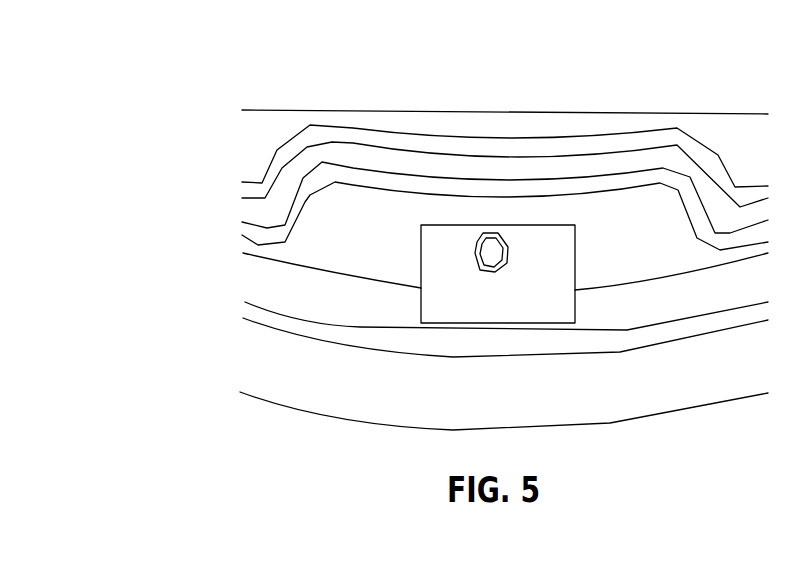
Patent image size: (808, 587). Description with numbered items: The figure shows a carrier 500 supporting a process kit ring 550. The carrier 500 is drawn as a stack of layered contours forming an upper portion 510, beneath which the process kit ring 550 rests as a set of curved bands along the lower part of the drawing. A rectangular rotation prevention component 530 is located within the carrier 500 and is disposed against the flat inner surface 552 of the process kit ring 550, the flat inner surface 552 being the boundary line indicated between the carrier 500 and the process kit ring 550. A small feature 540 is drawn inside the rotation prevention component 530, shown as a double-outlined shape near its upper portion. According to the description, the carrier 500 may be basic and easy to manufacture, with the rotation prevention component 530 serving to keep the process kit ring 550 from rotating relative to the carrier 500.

The carrier 500 is at (187, 108).
The upper layer stack 510 is at (643, 246).
The rotation prevention component 530 is at (502, 305).
The contact feature 540 is at (485, 253).
The process kit ring 550 is at (502, 415).
The flat inner surface 552 is at (403, 330).